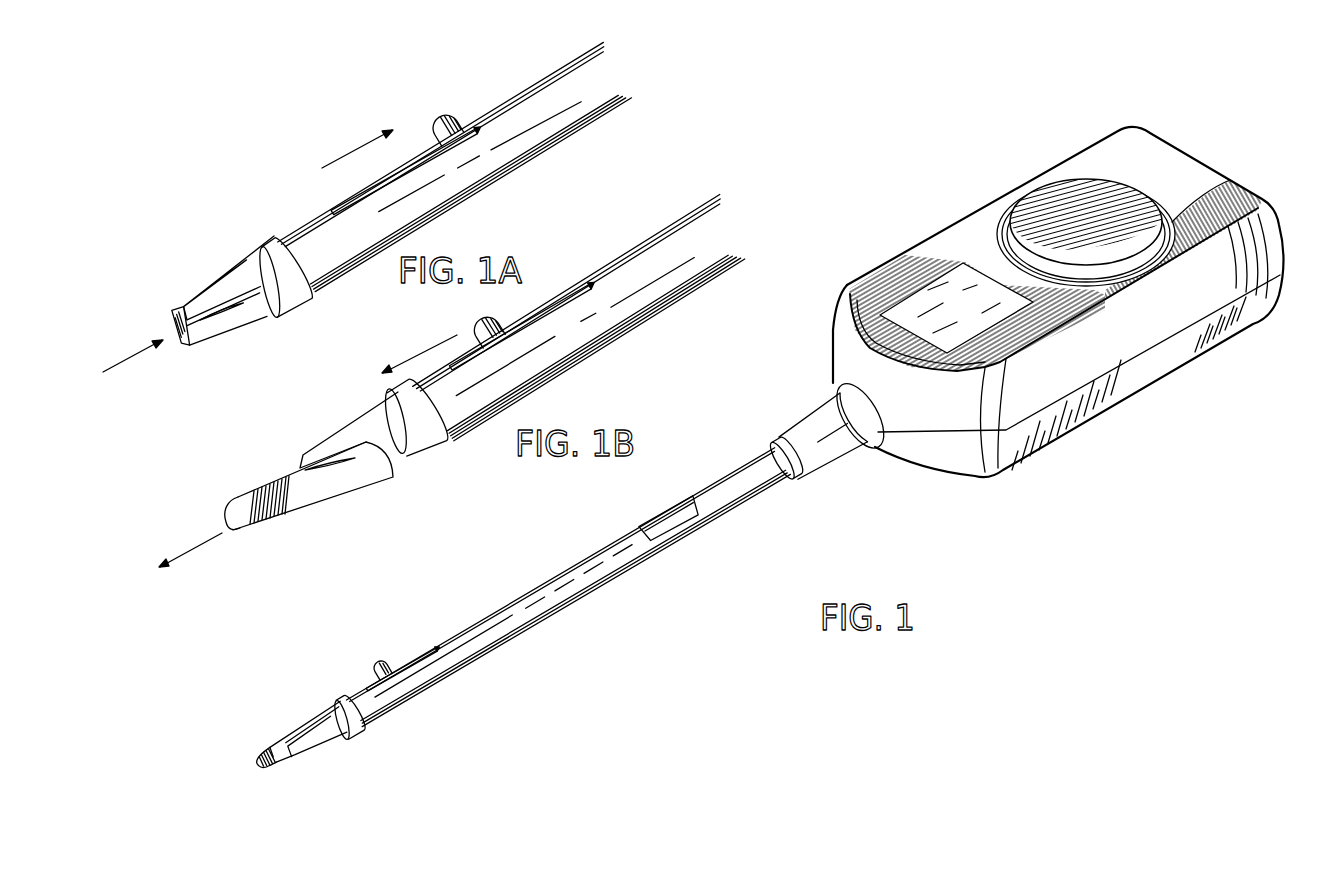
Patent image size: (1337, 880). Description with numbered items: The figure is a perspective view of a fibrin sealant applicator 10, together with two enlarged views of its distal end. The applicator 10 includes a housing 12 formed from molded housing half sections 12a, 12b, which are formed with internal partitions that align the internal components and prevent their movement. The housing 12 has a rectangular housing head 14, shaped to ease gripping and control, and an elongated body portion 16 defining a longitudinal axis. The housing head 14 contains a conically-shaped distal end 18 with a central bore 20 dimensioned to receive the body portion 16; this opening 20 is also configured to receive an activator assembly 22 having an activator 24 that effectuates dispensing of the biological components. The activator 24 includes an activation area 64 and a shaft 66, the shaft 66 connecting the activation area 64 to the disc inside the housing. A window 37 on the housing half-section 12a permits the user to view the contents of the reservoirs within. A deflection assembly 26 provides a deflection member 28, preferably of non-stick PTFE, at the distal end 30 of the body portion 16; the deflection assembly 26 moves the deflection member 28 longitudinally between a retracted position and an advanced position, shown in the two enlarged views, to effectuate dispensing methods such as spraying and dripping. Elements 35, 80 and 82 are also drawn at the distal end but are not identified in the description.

In FIG. 1, the fibrin sealant applicator 10 is at (1013, 58).
In FIG. 1, the housing 12 is at (1085, 272).
In FIG. 1, the housing half section 12a is at (1287, 237).
In FIG. 1, the housing half section 12b is at (1288, 303).
In FIG. 1, the housing head 14 is at (1205, 172).
In FIG. 1A, the elongated body portion 16 is at (585, 108).
In FIG. 1B, the elongated body portion 16 is at (712, 257).
In FIG. 1, the elongated body portion 16 is at (600, 566).
In FIG. 1, the conically-shaped distal end 18 is at (830, 470).
In FIG. 1, the bore 20 is at (782, 478).
In FIG. 1, the activator assembly 22 is at (1042, 194).
In FIG. 1, the activator 24 is at (1102, 176).
In FIG. 1A, the deflection assembly 26 is at (259, 221).
In FIG. 1B, the deflection assembly 26 is at (333, 407).
In FIG. 1, the deflection assembly 26 is at (318, 705).
In FIG. 1A, the deflection member 28 is at (193, 303).
In FIG. 1B, the deflection member 28 is at (250, 490).
In FIG. 1, the deflection member 28 is at (288, 765).
In FIG. 1, the distal end 30 is at (350, 735).
In FIG. 1A, the blade 35 is at (237, 322).
In FIG. 1B, the blade 35 is at (353, 478).
In FIG. 1, the blade 35 is at (322, 742).
In FIG. 1, the window 37 is at (958, 265).
In FIG. 1, the activation area 64 is at (1092, 178).
In FIG. 1, the shaft 66 is at (1236, 172).
In FIG. 1A, the slider tab 80 is at (448, 112).
In FIG. 1B, the slider tab 80 is at (490, 320).
In FIG. 1, the slider tab 80 is at (384, 665).
In FIG. 1A, the slot 82 is at (416, 148).
In FIG. 1B, the slot 82 is at (568, 290).
In FIG. 1, the slot 82 is at (432, 648).